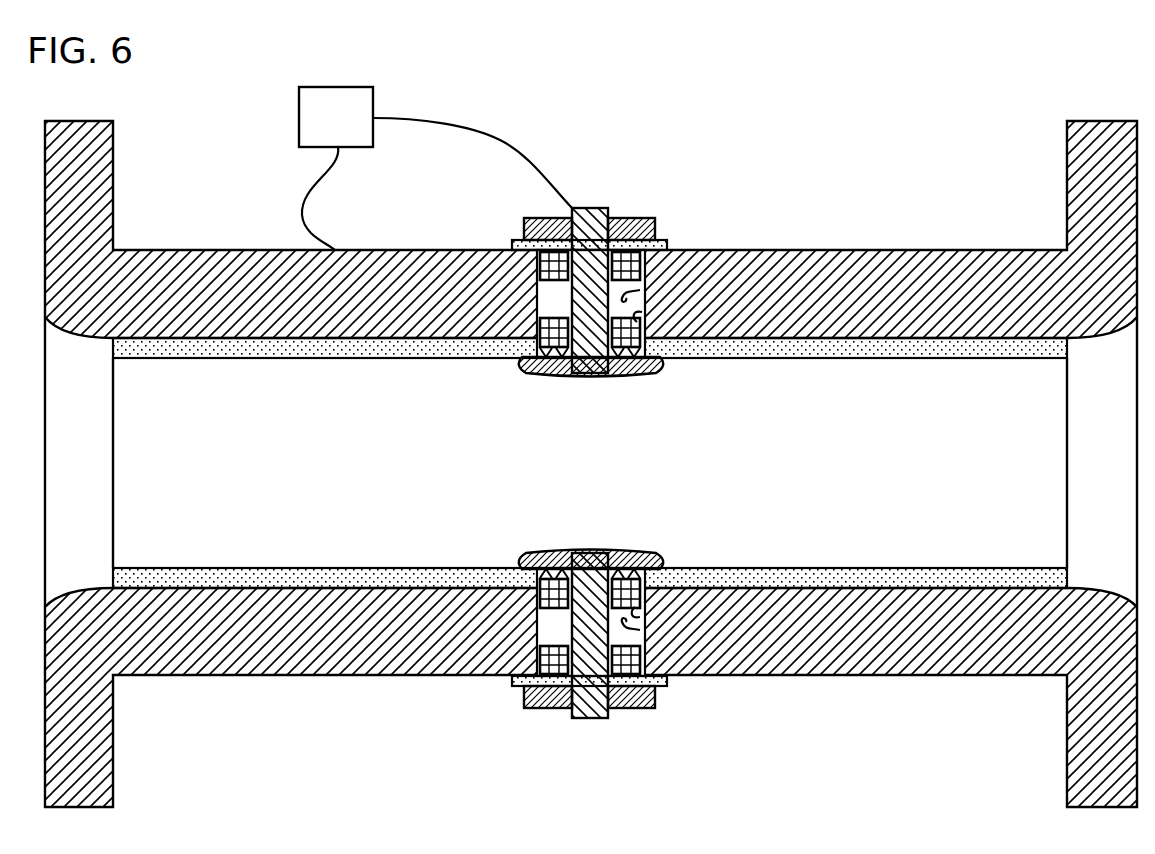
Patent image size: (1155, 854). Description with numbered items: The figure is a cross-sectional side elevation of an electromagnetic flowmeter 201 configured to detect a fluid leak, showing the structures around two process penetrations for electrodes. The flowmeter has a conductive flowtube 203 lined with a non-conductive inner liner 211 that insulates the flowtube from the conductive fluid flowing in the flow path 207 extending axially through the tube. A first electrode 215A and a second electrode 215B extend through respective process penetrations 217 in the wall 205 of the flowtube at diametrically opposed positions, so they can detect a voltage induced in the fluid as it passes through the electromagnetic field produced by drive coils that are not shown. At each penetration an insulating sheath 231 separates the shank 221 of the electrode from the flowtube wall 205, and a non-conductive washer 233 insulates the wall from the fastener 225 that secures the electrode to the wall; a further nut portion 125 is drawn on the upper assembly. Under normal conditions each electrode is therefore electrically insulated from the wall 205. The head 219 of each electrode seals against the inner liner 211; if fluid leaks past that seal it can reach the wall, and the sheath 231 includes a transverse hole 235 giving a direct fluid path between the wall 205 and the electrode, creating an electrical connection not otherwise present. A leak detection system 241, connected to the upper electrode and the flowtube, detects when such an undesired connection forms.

The electromagnetic flowmeter 201 is at (922, 97).
The conductive flowtube 203 is at (808, 250).
The wall of the flowtube 205 is at (222, 296).
The flow path 207 is at (855, 506).
The non-conductive inner liner 211 is at (778, 360).
The first electrode 215A is at (585, 248).
The second electrode 215B is at (582, 720).
The process penetration 217 is at (637, 322).
The head of the electrode 219 is at (618, 372).
The shank of the electrode 221 is at (598, 210).
The nut portion 125 is at (630, 230).
The fastener 225 is at (635, 697).
The insulating sheath 231 is at (540, 266).
The non-conductive washer 233 is at (660, 683).
The transverse hole 235 is at (640, 290).
The leak detection system 241 is at (435, 168).